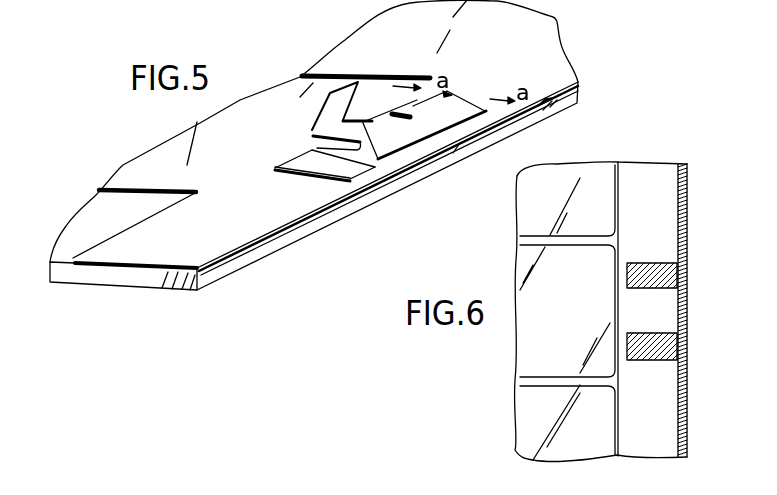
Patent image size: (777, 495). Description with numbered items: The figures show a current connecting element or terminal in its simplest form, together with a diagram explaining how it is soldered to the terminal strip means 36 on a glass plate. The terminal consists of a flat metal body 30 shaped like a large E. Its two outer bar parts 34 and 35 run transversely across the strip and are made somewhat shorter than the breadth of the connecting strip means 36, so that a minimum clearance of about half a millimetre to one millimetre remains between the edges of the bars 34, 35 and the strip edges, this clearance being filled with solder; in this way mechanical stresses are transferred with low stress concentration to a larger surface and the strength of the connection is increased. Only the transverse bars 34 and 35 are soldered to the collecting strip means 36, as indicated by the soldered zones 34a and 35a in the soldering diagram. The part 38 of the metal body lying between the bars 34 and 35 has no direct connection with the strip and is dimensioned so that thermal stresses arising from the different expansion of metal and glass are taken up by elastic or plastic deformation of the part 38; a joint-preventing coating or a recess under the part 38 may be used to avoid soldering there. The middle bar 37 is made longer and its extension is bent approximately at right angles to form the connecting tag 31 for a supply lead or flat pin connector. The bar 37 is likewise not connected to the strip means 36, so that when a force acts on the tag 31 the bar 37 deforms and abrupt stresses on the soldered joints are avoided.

In FIG. 5, the flat metal body 30 is at (387, 163).
In FIG. 6, the flat metal body 30 is at (682, 310).
In FIG. 5, the connecting tag 31 is at (342, 117).
In FIG. 5, the outer bar part 34 is at (312, 166).
In FIG. 5, the outer bar part 35 is at (462, 107).
In FIG. 5, the terminal strip means 36 is at (157, 222).
In FIG. 6, the terminal strip means 36 is at (643, 170).
In FIG. 5, the middle bar 37 is at (311, 136).
In FIG. 5, the part of the metal body between the bars 38 is at (420, 138).
In FIG. 6, the soldered joint of bar 34 34a is at (647, 350).
In FIG. 6, the soldered joint of bar 35 35a is at (640, 272).